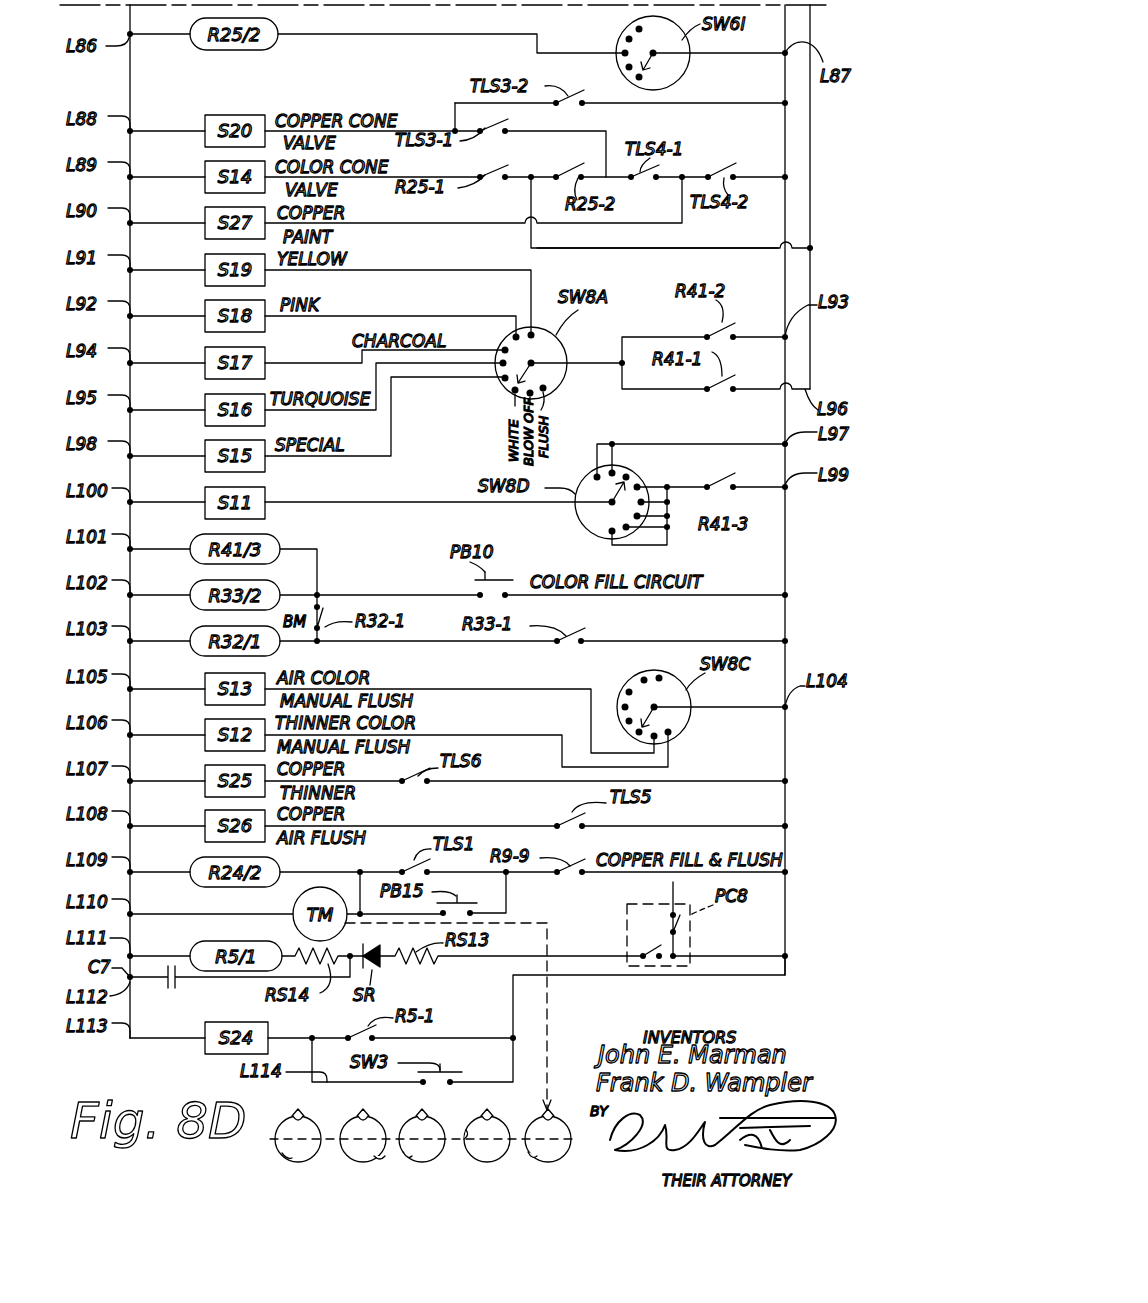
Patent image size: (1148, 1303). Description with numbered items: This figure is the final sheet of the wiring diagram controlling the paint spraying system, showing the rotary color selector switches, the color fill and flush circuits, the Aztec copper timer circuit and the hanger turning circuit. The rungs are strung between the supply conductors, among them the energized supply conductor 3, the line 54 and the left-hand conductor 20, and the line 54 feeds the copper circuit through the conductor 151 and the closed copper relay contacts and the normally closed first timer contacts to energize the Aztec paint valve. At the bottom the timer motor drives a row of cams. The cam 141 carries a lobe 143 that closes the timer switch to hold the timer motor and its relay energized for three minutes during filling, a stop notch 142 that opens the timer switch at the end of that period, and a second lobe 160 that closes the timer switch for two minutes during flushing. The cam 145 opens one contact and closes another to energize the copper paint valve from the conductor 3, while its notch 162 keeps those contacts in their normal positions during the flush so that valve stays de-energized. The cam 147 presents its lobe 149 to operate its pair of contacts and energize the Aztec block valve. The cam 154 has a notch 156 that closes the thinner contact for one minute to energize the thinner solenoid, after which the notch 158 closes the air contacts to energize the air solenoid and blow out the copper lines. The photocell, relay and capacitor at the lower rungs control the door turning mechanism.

The energized supply conductor 3 is at (785, 80).
The supply line conductor 20 is at (130, 77).
The line 54 is at (810, 148).
The conductor 151 is at (662, 248).
The cam 141 is at (275, 1144).
The stop notch 142 is at (285, 1156).
The lobe 143 is at (312, 1118).
The cam 145 is at (378, 1150).
The cam 147 is at (405, 1152).
The lobe 149 is at (435, 1120).
The cam 154 is at (535, 1118).
The notch 156 is at (530, 1152).
The notch 158 is at (470, 1112).
The lobe 160 is at (275, 1135).
The notch 162 is at (345, 1151).